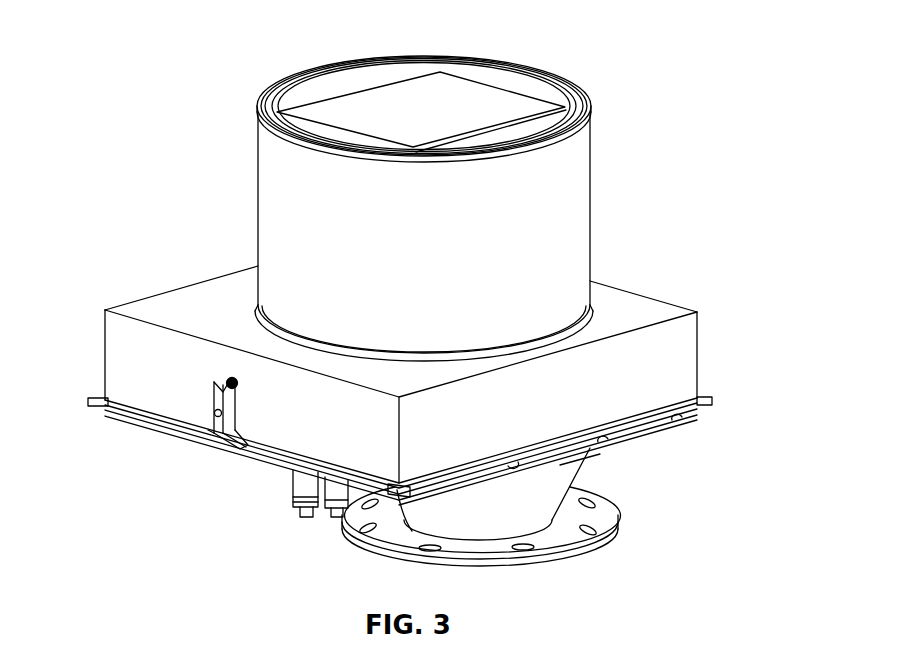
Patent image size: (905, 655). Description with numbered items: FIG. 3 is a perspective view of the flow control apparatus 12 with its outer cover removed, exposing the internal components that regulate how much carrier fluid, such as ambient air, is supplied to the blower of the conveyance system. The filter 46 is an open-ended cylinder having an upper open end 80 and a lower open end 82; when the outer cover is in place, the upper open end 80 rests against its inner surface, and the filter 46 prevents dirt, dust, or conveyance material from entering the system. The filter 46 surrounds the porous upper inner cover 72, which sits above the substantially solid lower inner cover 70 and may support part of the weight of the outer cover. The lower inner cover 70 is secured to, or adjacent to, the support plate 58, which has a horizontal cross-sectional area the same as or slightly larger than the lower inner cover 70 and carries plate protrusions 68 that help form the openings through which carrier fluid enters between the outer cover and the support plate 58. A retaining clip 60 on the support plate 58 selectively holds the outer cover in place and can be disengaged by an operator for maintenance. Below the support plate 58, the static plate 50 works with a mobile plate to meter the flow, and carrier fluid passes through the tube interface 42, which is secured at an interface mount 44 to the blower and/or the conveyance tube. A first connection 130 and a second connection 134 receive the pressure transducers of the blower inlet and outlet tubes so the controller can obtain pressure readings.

The flow control apparatus 12 is at (148, 39).
The upper inner cover 72 is at (500, 100).
The upper open end 80 is at (585, 73).
The filter 46 is at (577, 170).
The lower inner cover 70 is at (198, 302).
The lower open end 82 is at (612, 274).
The plate protrusion 68 is at (102, 412).
The static plate 50 is at (660, 422).
The support plate 58 is at (623, 432).
The retaining clip 60 is at (237, 405).
The second connection 134 is at (302, 513).
The first connection 130 is at (333, 513).
The tube interface 42 is at (612, 491).
The interface mount 44 is at (565, 538).